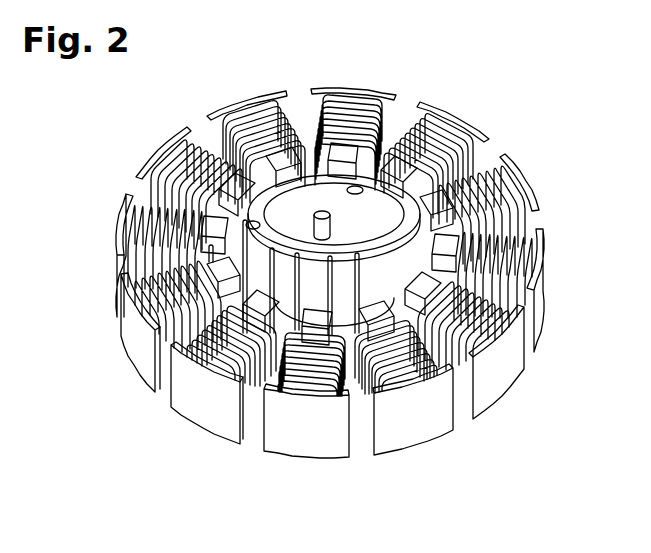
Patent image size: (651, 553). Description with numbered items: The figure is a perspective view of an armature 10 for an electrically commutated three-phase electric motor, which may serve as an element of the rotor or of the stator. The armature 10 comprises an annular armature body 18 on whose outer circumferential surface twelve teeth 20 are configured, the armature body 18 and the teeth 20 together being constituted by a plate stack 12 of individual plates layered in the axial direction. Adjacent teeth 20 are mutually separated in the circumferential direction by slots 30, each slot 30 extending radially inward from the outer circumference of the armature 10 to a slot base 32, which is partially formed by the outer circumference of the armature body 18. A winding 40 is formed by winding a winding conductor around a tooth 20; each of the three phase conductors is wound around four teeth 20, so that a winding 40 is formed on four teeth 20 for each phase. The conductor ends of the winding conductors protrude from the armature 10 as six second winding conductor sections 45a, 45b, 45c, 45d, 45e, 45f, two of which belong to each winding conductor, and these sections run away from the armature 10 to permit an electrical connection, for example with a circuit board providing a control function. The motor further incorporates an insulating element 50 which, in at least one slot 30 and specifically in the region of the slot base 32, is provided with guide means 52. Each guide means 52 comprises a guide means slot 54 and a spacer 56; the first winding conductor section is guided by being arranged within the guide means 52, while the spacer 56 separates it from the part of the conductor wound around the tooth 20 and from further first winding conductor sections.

The armature 10 is at (514, 129).
The plate stack 12 is at (452, 251).
The armature body 18 is at (462, 372).
The teeth 20 is at (384, 84).
The slots 30 is at (302, 120).
The slot base 32 is at (322, 128).
The winding 40 is at (258, 118).
The second winding conductor section 45a is at (195, 250).
The second winding conductor section 45b is at (160, 340).
The second winding conductor section 45c is at (180, 402).
The second winding conductor section 45d is at (257, 420).
The second winding conductor section 45e is at (328, 432).
The second winding conductor section 45f is at (403, 405).
The insulating element 50 is at (444, 222).
The guide means 52 is at (218, 313).
The guide means slot 54 is at (468, 136).
The spacer 56 is at (377, 130).